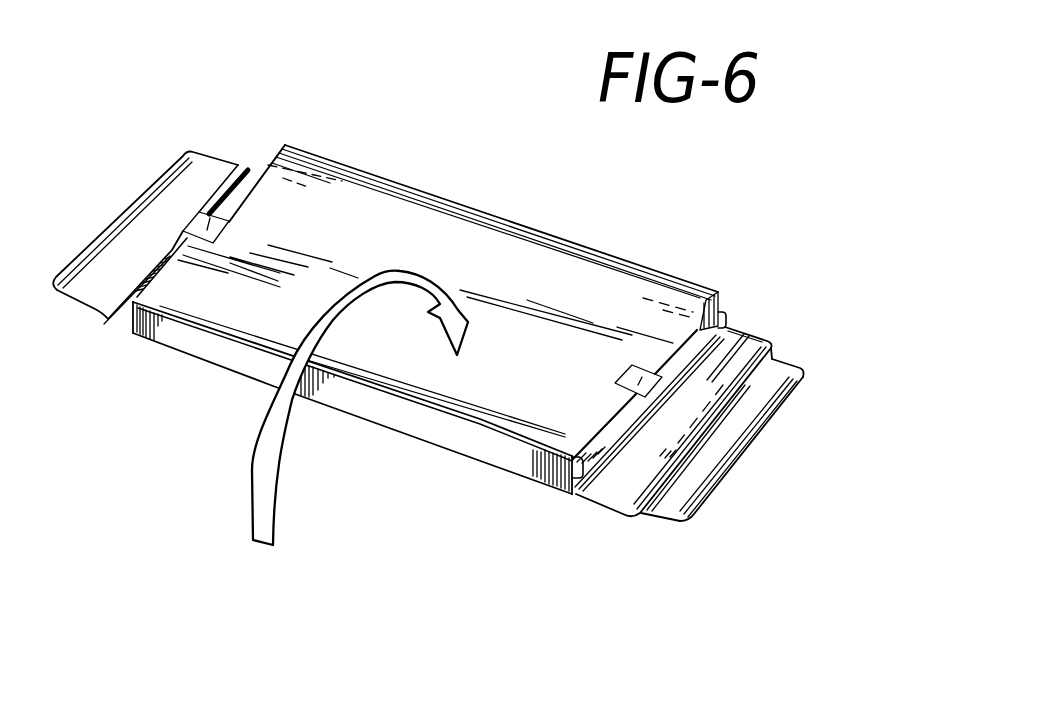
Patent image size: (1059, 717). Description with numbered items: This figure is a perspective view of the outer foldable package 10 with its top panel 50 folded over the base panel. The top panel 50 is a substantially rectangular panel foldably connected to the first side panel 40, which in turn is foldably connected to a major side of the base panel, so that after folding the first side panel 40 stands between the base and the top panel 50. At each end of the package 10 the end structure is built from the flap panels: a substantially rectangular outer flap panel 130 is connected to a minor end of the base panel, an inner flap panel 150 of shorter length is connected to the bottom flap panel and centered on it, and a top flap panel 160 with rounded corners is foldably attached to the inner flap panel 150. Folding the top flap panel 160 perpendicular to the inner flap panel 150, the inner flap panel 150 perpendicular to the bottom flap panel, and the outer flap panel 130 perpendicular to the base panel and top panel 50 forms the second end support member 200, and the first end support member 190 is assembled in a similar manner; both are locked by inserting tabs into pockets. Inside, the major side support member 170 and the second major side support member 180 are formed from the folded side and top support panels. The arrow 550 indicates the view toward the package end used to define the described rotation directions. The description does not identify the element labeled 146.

The outer foldable package 10 is at (466, 130).
The first side panel 40 is at (417, 423).
The top panel 50 is at (513, 278).
The outer flap panel 130 is at (730, 350).
The rib 146 is at (773, 350).
The inner flap panel 150 is at (780, 373).
The top flap panel 160 is at (805, 382).
The major side support member 170 is at (737, 288).
The second major side support member 180 is at (565, 510).
The first end support member 190 is at (643, 535).
The second end support member 200 is at (236, 122).
The arrow 550 is at (745, 509).